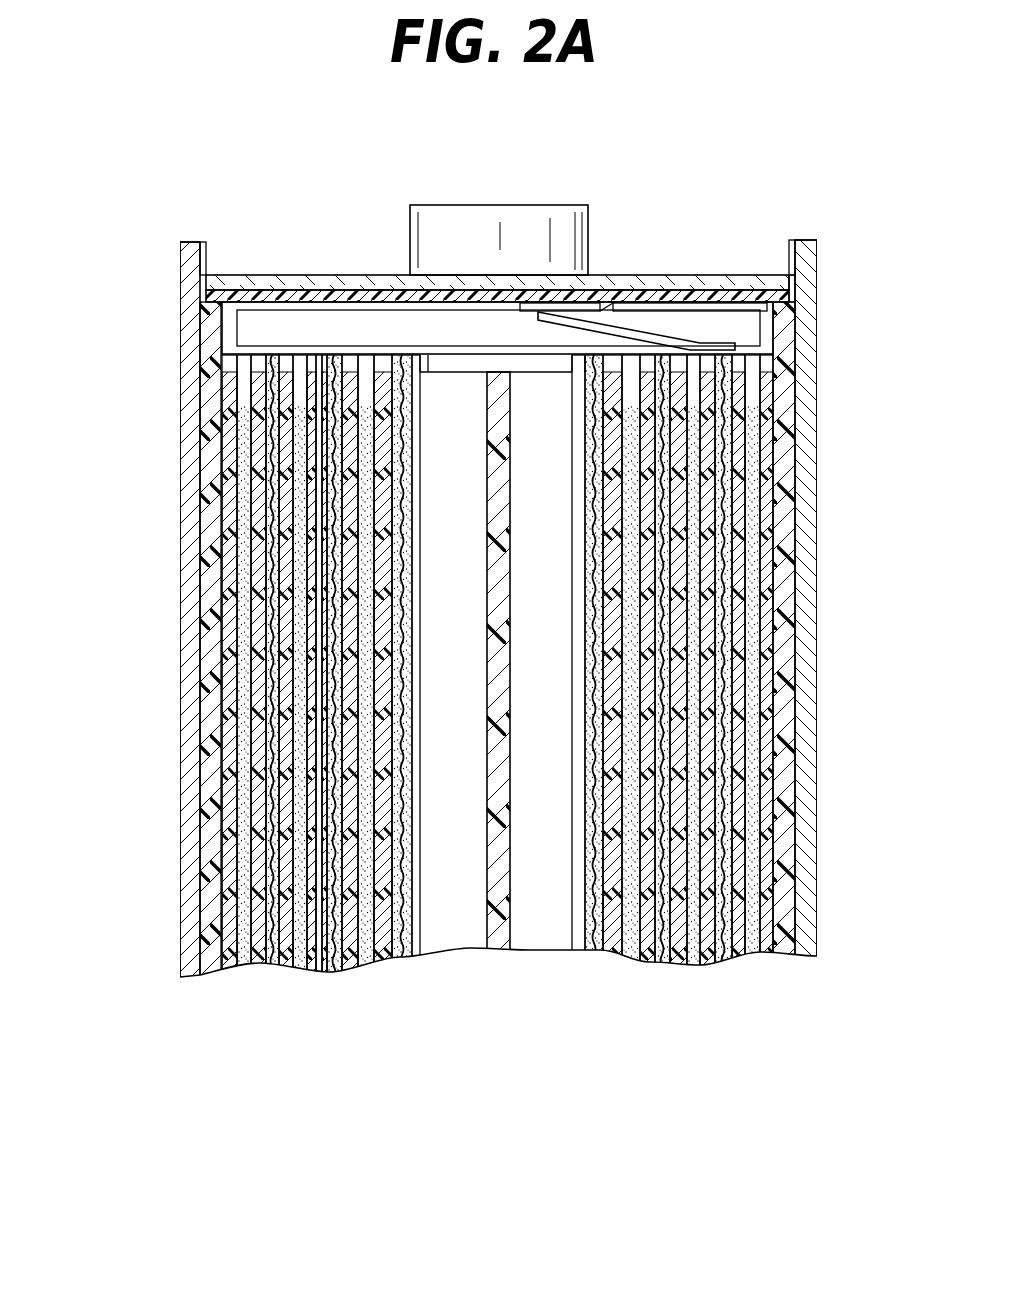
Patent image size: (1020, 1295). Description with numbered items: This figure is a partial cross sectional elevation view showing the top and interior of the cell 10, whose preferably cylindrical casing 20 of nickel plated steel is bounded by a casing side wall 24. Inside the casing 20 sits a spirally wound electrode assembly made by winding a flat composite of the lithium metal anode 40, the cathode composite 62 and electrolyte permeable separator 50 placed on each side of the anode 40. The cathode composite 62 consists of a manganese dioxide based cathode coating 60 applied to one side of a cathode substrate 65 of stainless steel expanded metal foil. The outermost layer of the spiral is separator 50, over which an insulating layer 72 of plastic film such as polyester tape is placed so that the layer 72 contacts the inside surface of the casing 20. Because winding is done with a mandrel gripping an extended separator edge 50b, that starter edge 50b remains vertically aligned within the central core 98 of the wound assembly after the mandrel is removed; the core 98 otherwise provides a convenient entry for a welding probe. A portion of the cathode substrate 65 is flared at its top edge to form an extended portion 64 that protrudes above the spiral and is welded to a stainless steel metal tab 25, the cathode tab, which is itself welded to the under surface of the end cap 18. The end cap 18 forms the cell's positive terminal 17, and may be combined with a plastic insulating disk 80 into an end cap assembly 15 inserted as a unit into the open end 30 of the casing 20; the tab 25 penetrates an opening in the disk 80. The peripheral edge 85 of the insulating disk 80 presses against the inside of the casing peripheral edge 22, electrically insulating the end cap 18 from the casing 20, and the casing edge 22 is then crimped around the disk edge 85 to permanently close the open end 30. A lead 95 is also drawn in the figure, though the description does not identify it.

The electrochemical cell 10 is at (824, 357).
The end cap assembly 15 is at (497, 213).
The terminal 17 is at (510, 205).
The end cap 18 is at (330, 278).
The cell casing 20 is at (200, 350).
The casing peripheral edge 22 is at (180, 246).
The casing side wall 24 is at (182, 868).
The metal tab 25 is at (745, 348).
The open end 30 is at (215, 288).
The anode 40 is at (240, 514).
The separator 50 is at (257, 590).
The extended separator edge 50b is at (520, 950).
The cathode coating 60 is at (738, 647).
The cathode composite 62 is at (262, 689).
The extended portion 64 is at (775, 352).
The cathode substrate 65 is at (730, 666).
The insulating layer 72 is at (213, 462).
The insulating disk 80 is at (795, 292).
The peripheral edge of insulating disk 85 is at (208, 272).
The electrode lead 95 is at (688, 305).
The core 98 is at (470, 948).